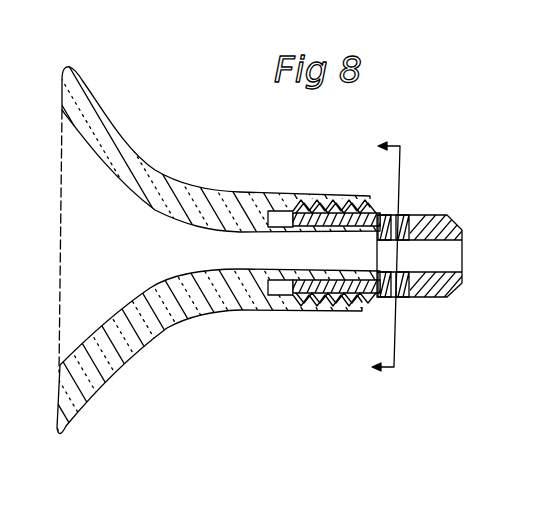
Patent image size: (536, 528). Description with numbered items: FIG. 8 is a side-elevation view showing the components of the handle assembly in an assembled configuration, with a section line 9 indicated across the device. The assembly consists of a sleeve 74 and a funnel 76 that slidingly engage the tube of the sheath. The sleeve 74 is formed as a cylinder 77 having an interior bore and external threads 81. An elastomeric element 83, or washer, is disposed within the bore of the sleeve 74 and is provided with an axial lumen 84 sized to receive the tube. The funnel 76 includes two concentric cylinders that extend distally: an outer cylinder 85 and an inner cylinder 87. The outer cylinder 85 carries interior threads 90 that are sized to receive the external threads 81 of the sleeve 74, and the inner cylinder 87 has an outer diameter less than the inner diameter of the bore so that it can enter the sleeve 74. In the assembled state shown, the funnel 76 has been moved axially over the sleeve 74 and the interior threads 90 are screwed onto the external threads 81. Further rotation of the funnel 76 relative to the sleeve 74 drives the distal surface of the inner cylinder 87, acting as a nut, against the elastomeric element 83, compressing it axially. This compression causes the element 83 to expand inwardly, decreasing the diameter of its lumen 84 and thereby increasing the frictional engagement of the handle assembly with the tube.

The funnel 76 is at (148, 117).
The cylinder 77 is at (318, 311).
The interior threads 90 is at (278, 311).
The external threads 81 is at (368, 302).
The inner cylinder 87 is at (327, 236).
The outer cylinder 85 is at (362, 193).
The sleeve 74 is at (423, 183).
The elastomeric element 83 is at (412, 258).
The axial lumen 84 is at (410, 265).
The section line 9- 9 is at (370, 258).